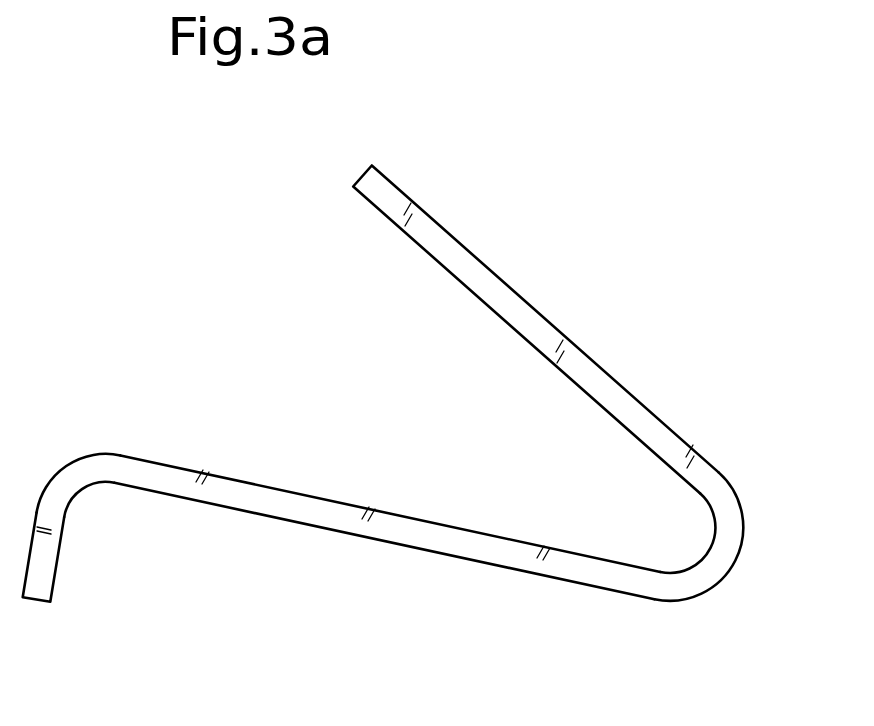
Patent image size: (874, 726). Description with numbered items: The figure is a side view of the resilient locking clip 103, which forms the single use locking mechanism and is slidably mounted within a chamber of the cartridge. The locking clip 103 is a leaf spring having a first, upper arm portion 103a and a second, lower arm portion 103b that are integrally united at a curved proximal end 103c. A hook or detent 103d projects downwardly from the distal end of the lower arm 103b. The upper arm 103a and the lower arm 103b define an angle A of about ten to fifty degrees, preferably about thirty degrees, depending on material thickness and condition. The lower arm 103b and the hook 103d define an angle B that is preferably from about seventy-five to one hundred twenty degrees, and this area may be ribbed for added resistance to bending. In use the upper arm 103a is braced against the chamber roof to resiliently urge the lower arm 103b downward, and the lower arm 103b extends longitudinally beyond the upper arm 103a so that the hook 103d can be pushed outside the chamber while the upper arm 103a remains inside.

The locking clip 103 is at (435, 418).
The upper arm portion 103a is at (453, 243).
The lower arm portion 103b is at (433, 553).
The curved proximal end 103c is at (738, 532).
The hook 103d is at (45, 600).
The angle between upper and lower arms A is at (408, 507).
The angle between lower arm and hook B is at (67, 567).